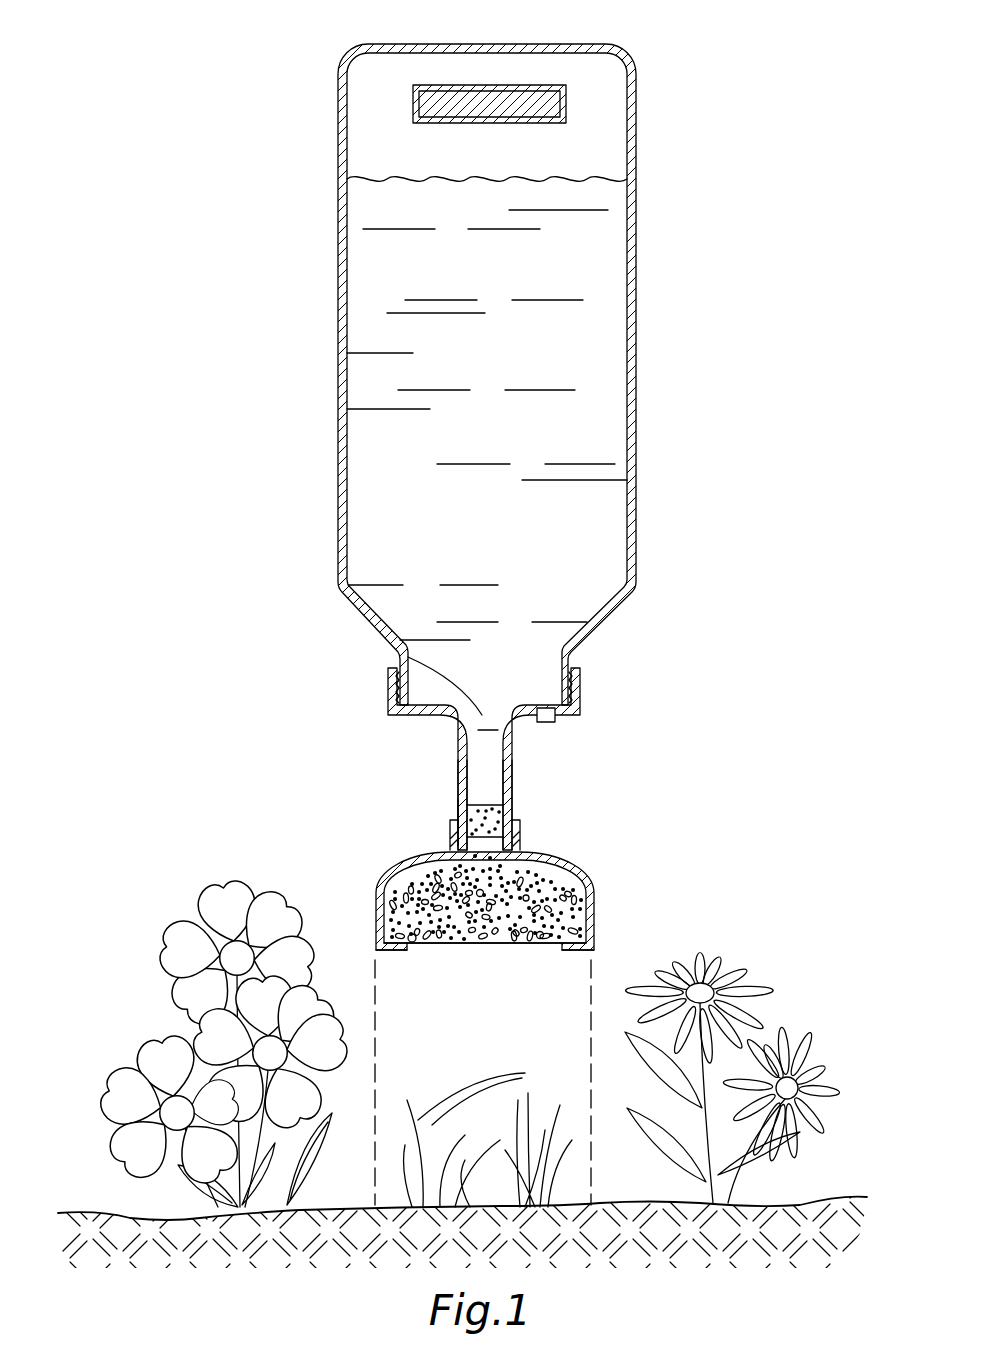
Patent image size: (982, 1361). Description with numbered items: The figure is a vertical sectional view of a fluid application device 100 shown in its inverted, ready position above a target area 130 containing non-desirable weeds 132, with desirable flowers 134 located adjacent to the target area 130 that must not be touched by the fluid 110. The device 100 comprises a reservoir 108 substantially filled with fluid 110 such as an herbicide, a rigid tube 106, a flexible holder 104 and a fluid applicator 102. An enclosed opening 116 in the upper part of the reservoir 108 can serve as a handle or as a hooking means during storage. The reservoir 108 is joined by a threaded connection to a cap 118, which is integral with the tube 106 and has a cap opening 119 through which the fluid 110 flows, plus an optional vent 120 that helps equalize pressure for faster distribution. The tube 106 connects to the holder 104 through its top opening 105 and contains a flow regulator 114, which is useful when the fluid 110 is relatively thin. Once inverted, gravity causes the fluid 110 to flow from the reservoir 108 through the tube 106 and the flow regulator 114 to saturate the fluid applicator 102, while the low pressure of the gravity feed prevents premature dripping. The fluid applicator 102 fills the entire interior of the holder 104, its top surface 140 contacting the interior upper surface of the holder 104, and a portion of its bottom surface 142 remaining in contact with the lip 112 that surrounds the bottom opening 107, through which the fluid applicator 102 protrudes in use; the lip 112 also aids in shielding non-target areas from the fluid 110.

The fluid application device 100 is at (165, 83).
The fluid applicator 102 is at (428, 880).
The holder 104 is at (572, 878).
The top opening 105 is at (458, 822).
The tube 106 is at (512, 759).
The bottom opening 107 is at (520, 950).
The reservoir 108 is at (637, 128).
The fluid 110 is at (367, 293).
The lip 112 is at (395, 955).
The flow regulator 114 is at (497, 808).
The enclosed opening 116 is at (479, 95).
The cap 118 is at (582, 700).
The cap opening 119 is at (400, 655).
The vent 120 is at (557, 721).
The target area 130 is at (591, 1179).
The weeds 132 is at (525, 1076).
The flowers 134 is at (180, 932).
The top surface 140 is at (450, 825).
The bottom surface 142 is at (500, 947).